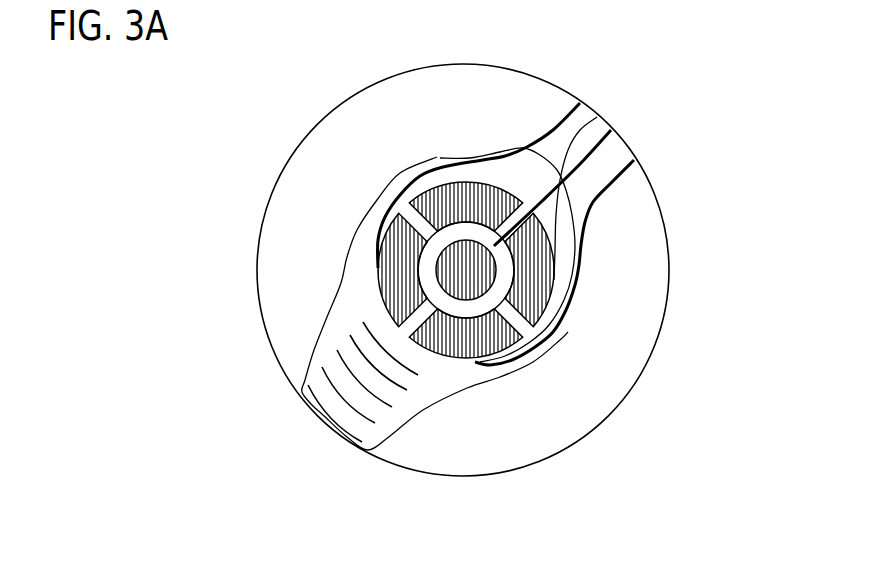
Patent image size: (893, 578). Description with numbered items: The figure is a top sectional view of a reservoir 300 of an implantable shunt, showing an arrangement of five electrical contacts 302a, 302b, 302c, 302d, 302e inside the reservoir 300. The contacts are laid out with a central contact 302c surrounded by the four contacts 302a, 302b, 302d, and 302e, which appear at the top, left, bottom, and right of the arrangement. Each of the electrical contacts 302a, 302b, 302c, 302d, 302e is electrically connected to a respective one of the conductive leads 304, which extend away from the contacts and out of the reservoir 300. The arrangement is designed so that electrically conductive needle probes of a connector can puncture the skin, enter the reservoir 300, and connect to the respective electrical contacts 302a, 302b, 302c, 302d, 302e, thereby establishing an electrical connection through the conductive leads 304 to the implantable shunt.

The reservoir 300 is at (616, 231).
The electrical contact 302a is at (474, 180).
The electrical contact 302b is at (377, 283).
The electrical contact 302c is at (443, 232).
The electrical contact 302d is at (447, 358).
The electrical contact 302e is at (555, 277).
The conductive leads 304 is at (563, 332).